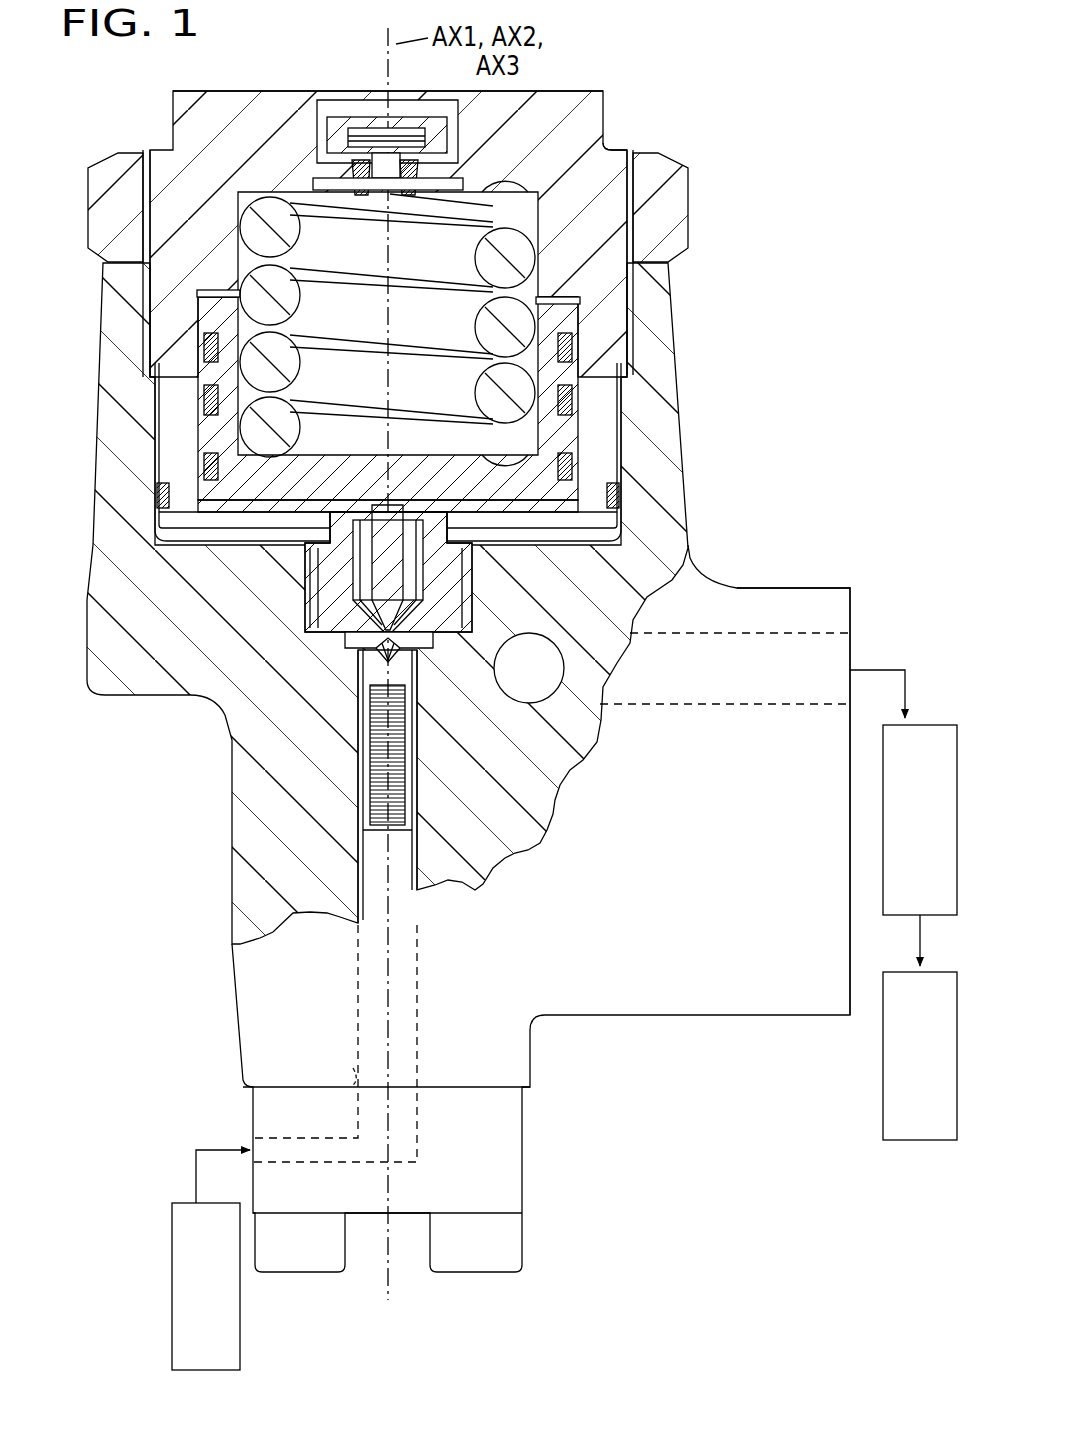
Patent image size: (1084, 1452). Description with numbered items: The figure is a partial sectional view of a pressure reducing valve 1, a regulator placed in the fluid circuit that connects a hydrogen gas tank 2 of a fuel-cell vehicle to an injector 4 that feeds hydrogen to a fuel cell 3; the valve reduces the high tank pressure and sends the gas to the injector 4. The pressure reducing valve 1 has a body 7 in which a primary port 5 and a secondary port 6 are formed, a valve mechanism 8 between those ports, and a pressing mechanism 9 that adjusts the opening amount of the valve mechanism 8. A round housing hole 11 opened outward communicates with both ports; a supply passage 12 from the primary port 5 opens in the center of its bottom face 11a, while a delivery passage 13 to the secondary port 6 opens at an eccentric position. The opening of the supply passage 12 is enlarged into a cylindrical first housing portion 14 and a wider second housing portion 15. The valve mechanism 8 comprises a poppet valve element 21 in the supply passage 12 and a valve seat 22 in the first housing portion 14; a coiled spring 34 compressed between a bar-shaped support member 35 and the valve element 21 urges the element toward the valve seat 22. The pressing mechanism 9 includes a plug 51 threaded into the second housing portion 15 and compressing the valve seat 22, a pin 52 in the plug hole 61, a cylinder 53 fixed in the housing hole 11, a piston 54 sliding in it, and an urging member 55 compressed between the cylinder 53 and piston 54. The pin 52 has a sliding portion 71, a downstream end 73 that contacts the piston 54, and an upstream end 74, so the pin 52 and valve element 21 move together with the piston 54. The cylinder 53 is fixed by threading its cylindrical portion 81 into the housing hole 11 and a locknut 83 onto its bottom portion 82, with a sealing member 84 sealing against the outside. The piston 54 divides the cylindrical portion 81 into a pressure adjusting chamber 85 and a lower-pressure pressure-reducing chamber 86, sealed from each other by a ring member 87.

The pressure reducing valve 1 is at (769, 85).
The gas tank 2 is at (172, 1226).
The fuel cell 3 is at (883, 1100).
The injector 4 is at (888, 902).
The primary port 5 is at (352, 1075).
The secondary port 6 is at (758, 640).
The body 7 is at (844, 588).
The valve mechanism 8 is at (240, 718).
The pressing mechanism 9 is at (648, 138).
The housing hole 11 is at (160, 470).
The bottom face 11a is at (162, 565).
The supply passage 12 is at (362, 920).
The delivery passage 13 is at (558, 652).
The first housing portion 14 is at (358, 652).
The second housing portion 15 is at (305, 626).
The valve element 21 is at (358, 745).
The valve seat 22 is at (432, 650).
The coiled spring 34 is at (405, 800).
The support member 35 is at (417, 880).
The plug 51 is at (472, 590).
The pin 52 is at (472, 560).
The cylinder 53 is at (583, 92).
The piston 54 is at (558, 297).
The urging member 55 is at (283, 174).
The plug hole 61 is at (412, 520).
The sliding portion 71 is at (305, 560).
The downstream end 73 is at (383, 520).
The upstream end 74 is at (472, 620).
The cylindrical portion 81 is at (598, 393).
The bottom portion 82 is at (218, 100).
The locknut 83 is at (688, 200).
The sealing member 84 is at (618, 495).
The pressure adjusting chamber 85 is at (205, 535).
The pressure-reducing chamber 86 is at (200, 293).
The ring member 87 is at (204, 465).